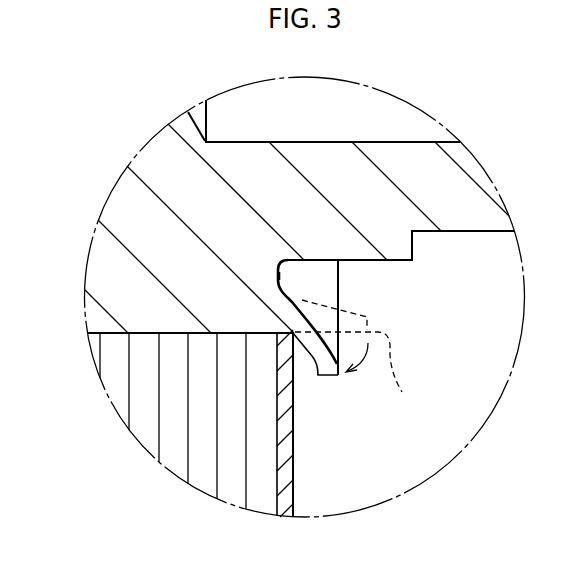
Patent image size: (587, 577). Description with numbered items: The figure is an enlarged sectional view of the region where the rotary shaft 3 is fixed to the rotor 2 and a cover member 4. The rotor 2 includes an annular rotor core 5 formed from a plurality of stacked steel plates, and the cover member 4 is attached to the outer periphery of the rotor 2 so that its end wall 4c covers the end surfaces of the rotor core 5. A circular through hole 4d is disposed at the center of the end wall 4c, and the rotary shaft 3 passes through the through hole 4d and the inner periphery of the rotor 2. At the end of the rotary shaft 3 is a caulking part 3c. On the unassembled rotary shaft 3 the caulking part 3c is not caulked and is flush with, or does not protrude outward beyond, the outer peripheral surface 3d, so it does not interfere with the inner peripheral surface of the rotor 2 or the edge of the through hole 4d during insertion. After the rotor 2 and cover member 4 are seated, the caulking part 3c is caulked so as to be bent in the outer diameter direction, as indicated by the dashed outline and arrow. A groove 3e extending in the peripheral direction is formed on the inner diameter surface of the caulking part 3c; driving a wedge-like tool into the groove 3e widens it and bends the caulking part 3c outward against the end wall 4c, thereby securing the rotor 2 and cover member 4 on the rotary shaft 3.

The rotor 2 is at (238, 450).
The rotor core 5 is at (173, 421).
The rotary shaft 3 is at (278, 254).
The caulking part 3c is at (332, 375).
The outer peripheral surface 3d is at (173, 335).
The groove 3e is at (281, 280).
The cover member 4 is at (335, 379).
The end wall 4c is at (285, 423).
The through hole 4d is at (286, 333).